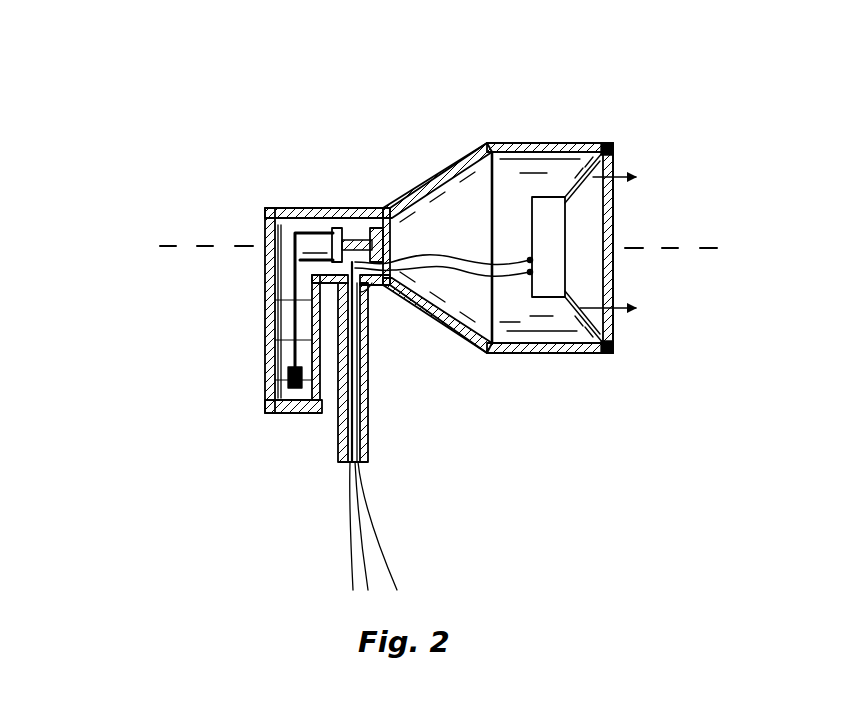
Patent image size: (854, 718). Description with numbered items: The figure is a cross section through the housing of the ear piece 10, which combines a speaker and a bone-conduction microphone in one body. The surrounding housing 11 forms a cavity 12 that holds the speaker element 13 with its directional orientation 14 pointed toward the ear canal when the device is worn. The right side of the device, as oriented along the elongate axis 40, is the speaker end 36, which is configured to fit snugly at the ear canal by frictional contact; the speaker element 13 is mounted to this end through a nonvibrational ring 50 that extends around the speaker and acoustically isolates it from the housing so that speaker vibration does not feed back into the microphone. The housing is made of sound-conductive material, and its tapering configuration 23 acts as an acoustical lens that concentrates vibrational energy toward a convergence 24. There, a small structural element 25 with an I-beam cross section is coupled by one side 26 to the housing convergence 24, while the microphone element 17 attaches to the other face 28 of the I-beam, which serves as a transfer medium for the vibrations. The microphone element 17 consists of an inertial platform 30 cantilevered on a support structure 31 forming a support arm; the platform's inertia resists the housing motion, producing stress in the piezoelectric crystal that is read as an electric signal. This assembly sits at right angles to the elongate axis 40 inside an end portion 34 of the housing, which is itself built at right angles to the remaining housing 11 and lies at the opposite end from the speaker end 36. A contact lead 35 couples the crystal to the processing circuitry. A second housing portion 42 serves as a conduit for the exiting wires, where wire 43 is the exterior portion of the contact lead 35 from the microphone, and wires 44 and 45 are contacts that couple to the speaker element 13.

The ear piece 10 is at (595, 138).
The housing 11 is at (533, 140).
The cavity 12 is at (507, 187).
The speaker element 13 is at (585, 240).
The directional orientation 14 is at (620, 177).
The microphone element 17 is at (289, 237).
The tapering configuration 23 is at (445, 165).
The convergence 24 is at (361, 233).
The structural element 25 is at (338, 227).
The one side of the I-beam 26 is at (372, 292).
The other face of the I-beam 28 is at (337, 228).
The inertial platform 30 is at (270, 385).
The support structure 31 is at (283, 320).
The end portion of the housing 34 is at (268, 357).
The contact lead 35 is at (285, 285).
The speaker end 36 is at (578, 353).
The elongate axis 40 is at (436, 251).
The second housing portion 42 is at (370, 385).
The wire 43 is at (350, 507).
The wire 44 is at (367, 563).
The wire 45 is at (365, 507).
The nonvibrational ring 50 is at (614, 147).